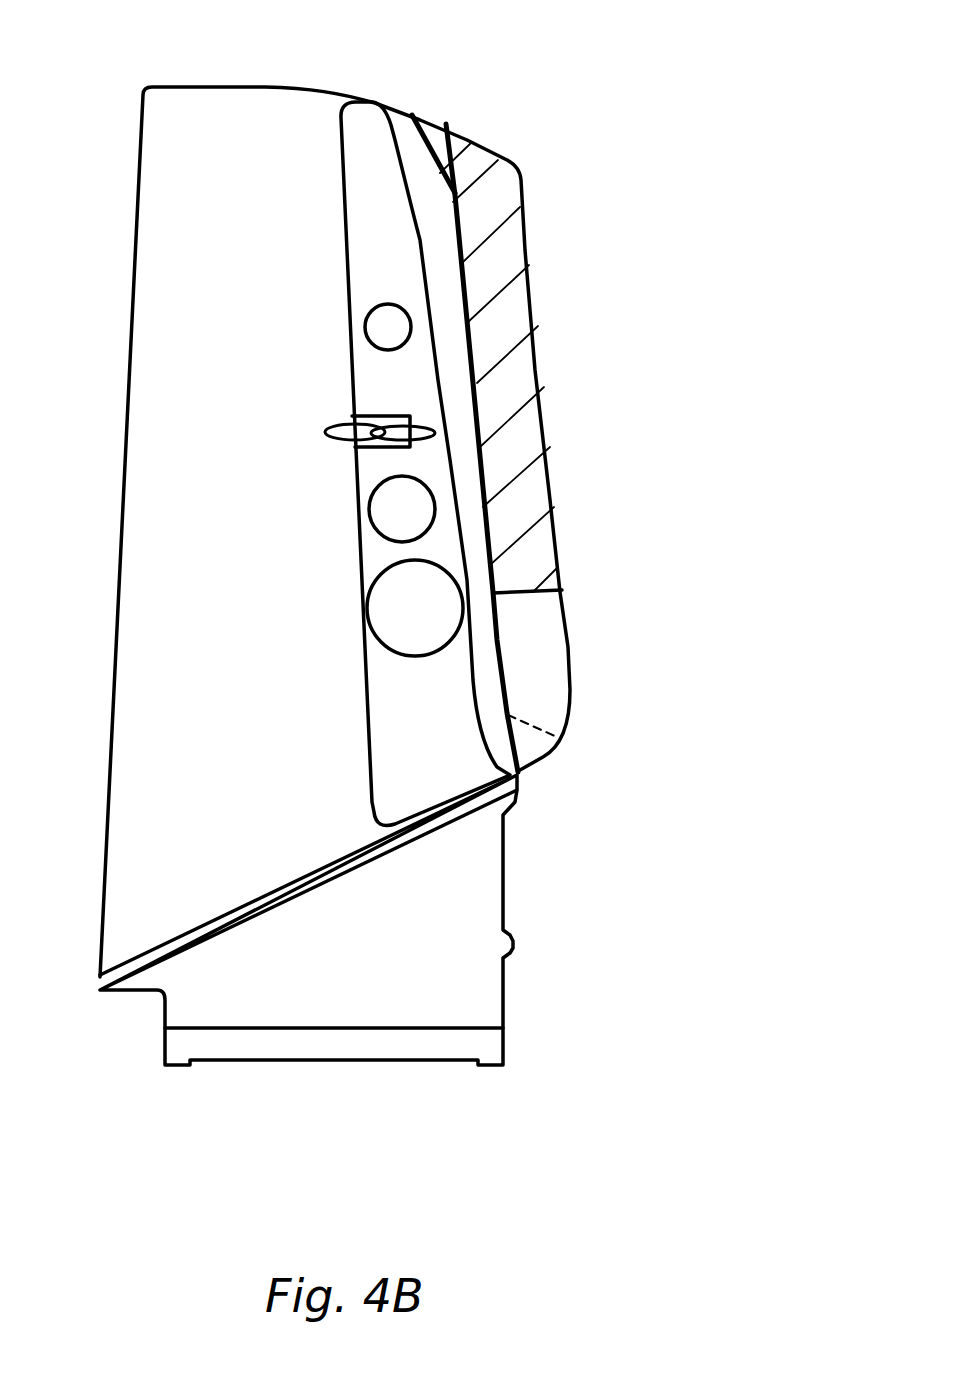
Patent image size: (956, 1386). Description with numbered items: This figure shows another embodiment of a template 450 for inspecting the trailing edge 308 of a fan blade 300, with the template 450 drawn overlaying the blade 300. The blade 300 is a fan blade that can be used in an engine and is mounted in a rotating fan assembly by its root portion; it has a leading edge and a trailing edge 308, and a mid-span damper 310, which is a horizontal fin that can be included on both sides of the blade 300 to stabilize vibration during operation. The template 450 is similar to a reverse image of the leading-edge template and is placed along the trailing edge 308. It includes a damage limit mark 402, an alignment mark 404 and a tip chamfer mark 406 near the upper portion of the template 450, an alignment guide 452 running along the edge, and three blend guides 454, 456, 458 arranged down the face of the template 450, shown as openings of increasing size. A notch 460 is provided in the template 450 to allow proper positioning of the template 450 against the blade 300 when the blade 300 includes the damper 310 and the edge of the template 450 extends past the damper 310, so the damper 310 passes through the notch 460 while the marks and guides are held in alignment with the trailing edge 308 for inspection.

The fan blade 300 is at (343, 95).
The damage limit mark 402 is at (418, 107).
The alignment mark 404 is at (452, 137).
The tip chamfer mark 406 is at (450, 158).
The alignment guide 452 is at (525, 347).
The template 450 is at (548, 652).
The trailing edge 308 is at (557, 737).
The blend guide 454 is at (365, 327).
The notch 460 is at (352, 415).
The mid-span damper 310 is at (325, 432).
The blend guide 456 is at (368, 510).
The blend guide 458 is at (363, 613).